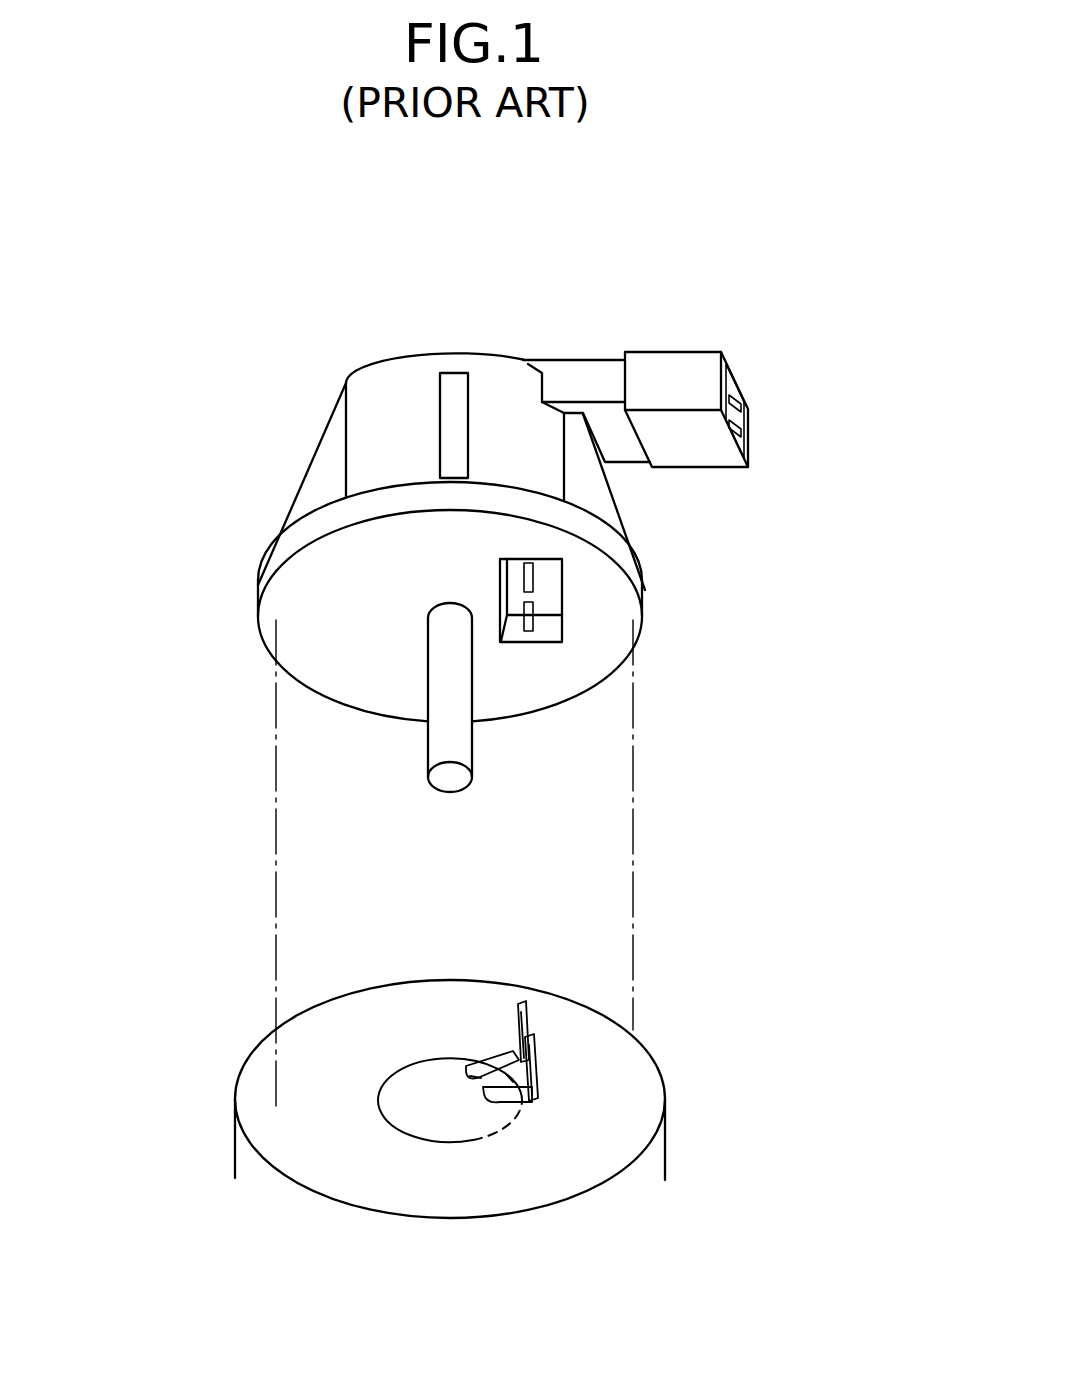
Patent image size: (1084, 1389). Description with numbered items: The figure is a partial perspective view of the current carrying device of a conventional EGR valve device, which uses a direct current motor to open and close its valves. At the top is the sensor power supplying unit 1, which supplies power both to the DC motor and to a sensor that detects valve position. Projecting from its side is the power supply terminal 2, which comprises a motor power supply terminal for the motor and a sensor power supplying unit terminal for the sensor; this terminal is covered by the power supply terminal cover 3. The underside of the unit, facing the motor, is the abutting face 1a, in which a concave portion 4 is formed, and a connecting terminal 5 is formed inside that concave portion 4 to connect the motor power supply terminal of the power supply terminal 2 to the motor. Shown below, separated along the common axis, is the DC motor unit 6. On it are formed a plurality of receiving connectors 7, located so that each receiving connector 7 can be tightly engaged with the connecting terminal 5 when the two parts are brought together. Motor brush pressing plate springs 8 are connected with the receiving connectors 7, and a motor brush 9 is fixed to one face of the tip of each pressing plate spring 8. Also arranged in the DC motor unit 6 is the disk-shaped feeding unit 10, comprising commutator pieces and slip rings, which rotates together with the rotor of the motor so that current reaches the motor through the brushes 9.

The sensor power supplying unit 1 is at (458, 338).
The abutting face 1a is at (523, 693).
The power supply terminal 2 is at (748, 402).
The power supply terminal cover 3 is at (680, 352).
The concave portion 4 is at (555, 588).
The connecting terminal 5 is at (530, 623).
The DC motor unit 6 is at (648, 1052).
The receiving connector 7 is at (528, 1018).
The motor brush pressing plate spring 8 is at (480, 1063).
The motor brush 9 is at (473, 1082).
The disk-shaped feeding unit 10 is at (413, 1083).